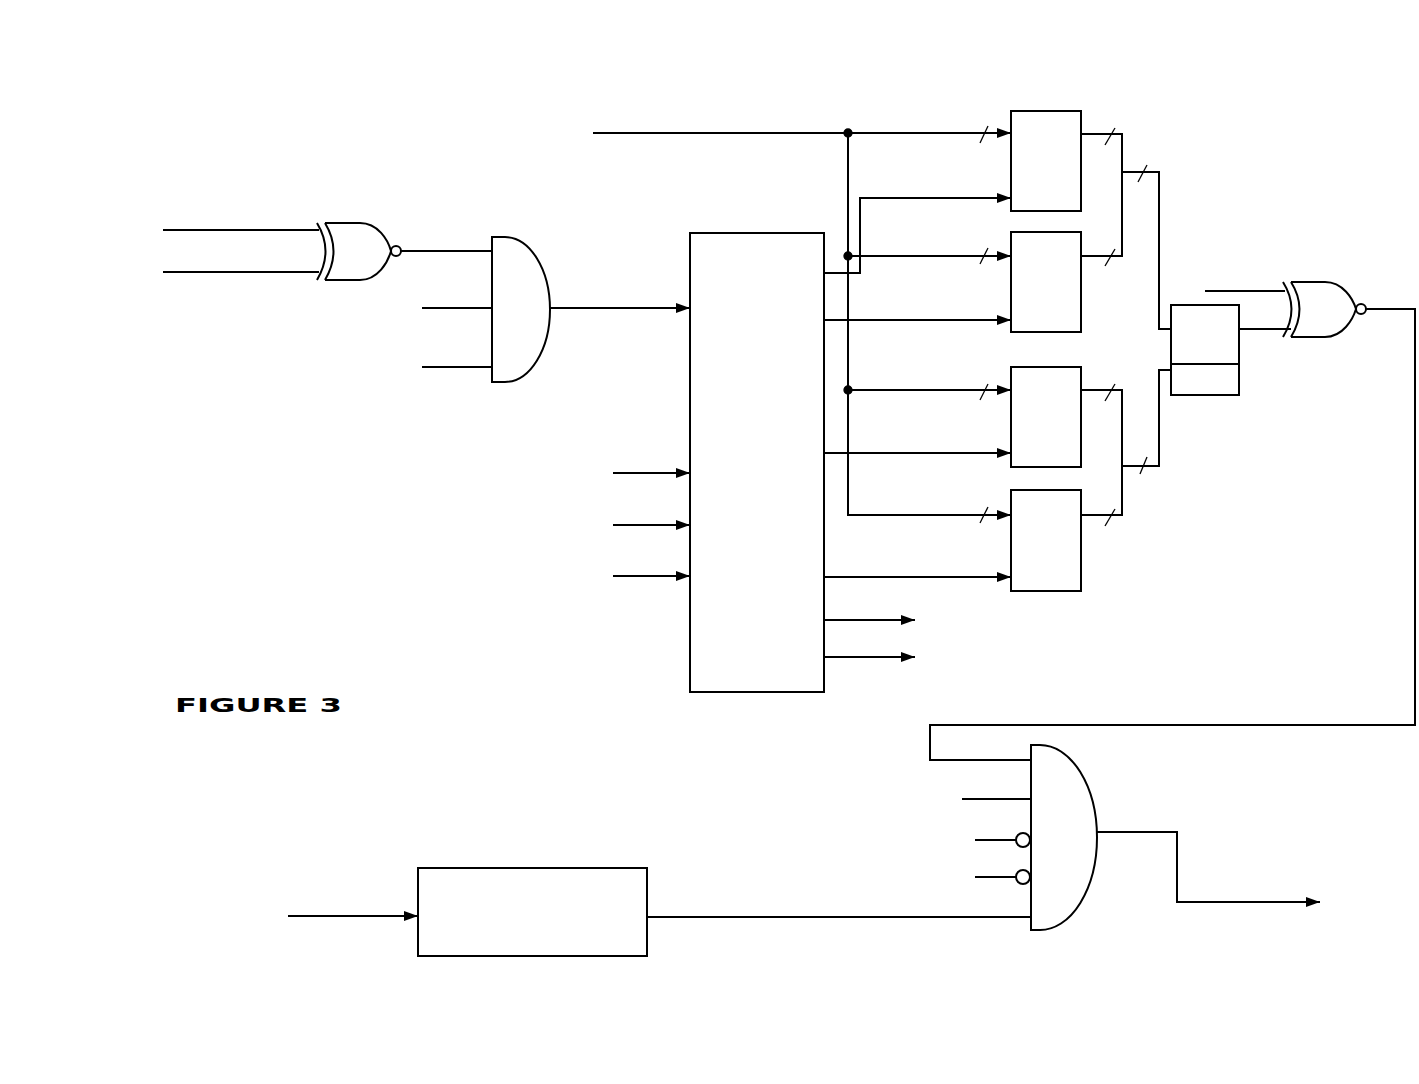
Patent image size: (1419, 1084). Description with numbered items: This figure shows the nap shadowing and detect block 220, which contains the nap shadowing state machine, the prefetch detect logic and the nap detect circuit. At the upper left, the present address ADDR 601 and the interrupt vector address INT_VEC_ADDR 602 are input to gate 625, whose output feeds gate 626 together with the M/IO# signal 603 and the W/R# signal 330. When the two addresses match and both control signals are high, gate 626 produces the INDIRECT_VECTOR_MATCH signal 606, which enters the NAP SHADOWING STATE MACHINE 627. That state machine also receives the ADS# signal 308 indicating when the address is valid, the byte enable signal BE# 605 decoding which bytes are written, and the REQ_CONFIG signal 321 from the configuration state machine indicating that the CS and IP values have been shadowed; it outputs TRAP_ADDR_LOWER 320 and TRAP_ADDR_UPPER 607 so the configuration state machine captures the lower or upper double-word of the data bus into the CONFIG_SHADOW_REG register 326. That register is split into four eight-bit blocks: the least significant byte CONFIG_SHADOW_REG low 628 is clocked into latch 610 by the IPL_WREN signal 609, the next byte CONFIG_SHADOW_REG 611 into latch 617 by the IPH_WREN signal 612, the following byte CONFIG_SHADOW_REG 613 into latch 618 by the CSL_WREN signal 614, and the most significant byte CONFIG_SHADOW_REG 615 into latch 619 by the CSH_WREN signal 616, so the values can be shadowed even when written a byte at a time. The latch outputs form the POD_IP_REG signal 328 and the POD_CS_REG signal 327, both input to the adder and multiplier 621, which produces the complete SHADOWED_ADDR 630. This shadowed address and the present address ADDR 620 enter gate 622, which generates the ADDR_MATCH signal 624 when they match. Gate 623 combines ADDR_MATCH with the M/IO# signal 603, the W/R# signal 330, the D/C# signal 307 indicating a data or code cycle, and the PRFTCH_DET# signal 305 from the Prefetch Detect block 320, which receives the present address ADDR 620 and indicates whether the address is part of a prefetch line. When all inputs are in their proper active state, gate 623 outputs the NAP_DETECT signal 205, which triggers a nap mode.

The present address ADDR[31:2] 601 is at (303, 226).
The INT_VEC_ADDR[31:2] 602 is at (283, 271).
The gate 625 is at (388, 245).
The gate 626 is at (546, 253).
The M/IO# signal 603 is at (461, 307).
The W/R# signal 330 is at (462, 366).
The INDIRECT_VECTOR_MATCH signal 606 is at (635, 305).
The NAP SHADOWING STATE MACHINE 627 is at (689, 668).
The ADS# signal 308 is at (638, 472).
The BE[7:0]# signal 605 is at (638, 523).
The REQ_CONFIG signal 321 is at (638, 574).
The CONFIG_SHADOW_REG[31:0] 326 is at (712, 140).
The CONFIG_SHADOW_REG[7:0] 628 is at (863, 132).
The CONFIG_SHADOW_REG[15:8] 611 is at (945, 253).
The CONFIG_SHADOW_REG[23:16] 613 is at (942, 385).
The CONFIG_SHADOW_REG[31:24] 615 is at (944, 508).
The IPL_WREN signal 609 is at (978, 196).
The IPH_WREN signal 612 is at (979, 318).
The CSL_WREN signal 614 is at (979, 451).
The CSH_WREN signal 616 is at (979, 576).
The TRAP_ADDR_LOWER / Prefetch Detect block 320 is at (865, 618).
The TRAP_ADDR_UPPER 607 is at (852, 658).
The latch 610 is at (1082, 115).
The latch 617 is at (1082, 320).
The latch 618 is at (1082, 369).
The latch 619 is at (1082, 578).
The POD_IP_REG[15:0] signal 328 is at (1160, 198).
The POD_CS_REG[15:0] signal 327 is at (1162, 458).
The adder and multiplier 621 is at (1230, 397).
The SHADOWED_ADDR[31:0] 630 is at (1270, 332).
The ADDR[31:3] 620 is at (1272, 283).
The gate 622 is at (1352, 320).
The ADDR_MATCH signal 624 is at (1381, 723).
The gate 623 is at (1068, 760).
The D/C# signal 307 is at (978, 840).
The PRFTCH_DET# signal 305 is at (692, 912).
The NAP_DETECT signal 205 is at (1253, 905).
The nap shadowing and detect block 220 is at (611, 761).